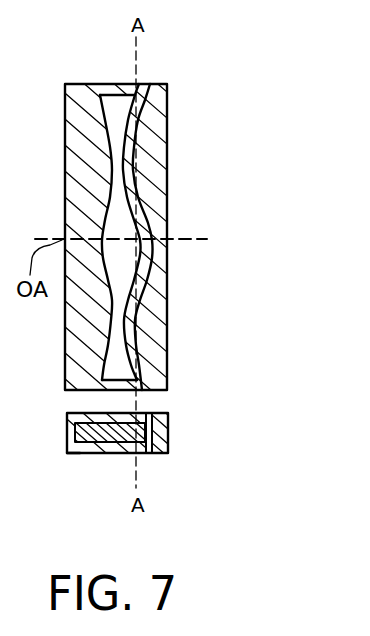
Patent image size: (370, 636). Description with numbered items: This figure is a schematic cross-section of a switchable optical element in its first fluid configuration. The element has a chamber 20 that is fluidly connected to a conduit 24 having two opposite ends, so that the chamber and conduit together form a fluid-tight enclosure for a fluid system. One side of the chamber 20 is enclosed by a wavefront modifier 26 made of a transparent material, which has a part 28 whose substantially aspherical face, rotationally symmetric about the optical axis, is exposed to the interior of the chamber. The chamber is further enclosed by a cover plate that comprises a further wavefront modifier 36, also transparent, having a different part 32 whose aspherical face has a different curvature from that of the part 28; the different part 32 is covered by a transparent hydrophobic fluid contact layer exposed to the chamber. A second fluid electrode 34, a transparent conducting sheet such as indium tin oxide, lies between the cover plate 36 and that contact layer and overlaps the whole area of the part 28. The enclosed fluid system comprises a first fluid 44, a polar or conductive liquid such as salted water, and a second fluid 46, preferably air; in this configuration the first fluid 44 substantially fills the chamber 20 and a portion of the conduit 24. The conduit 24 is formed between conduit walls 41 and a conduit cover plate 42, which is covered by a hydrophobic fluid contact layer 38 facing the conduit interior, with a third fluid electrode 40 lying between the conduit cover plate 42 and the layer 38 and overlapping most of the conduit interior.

The chamber 20 is at (112, 100).
The conduit 24 is at (107, 453).
The wavefront modifier 26 is at (80, 360).
The part 28 is at (112, 165).
The different part 32 is at (133, 186).
The second fluid electrode 34 is at (135, 335).
The further wavefront modifier 36 is at (158, 272).
The hydrophobic fluid contact layer 38 is at (150, 453).
The third fluid electrode 40 is at (165, 444).
The conduit walls 41 is at (74, 422).
The conduit cover plate 42 is at (162, 420).
The first fluid 44 is at (123, 252).
The second fluid 46 is at (82, 453).